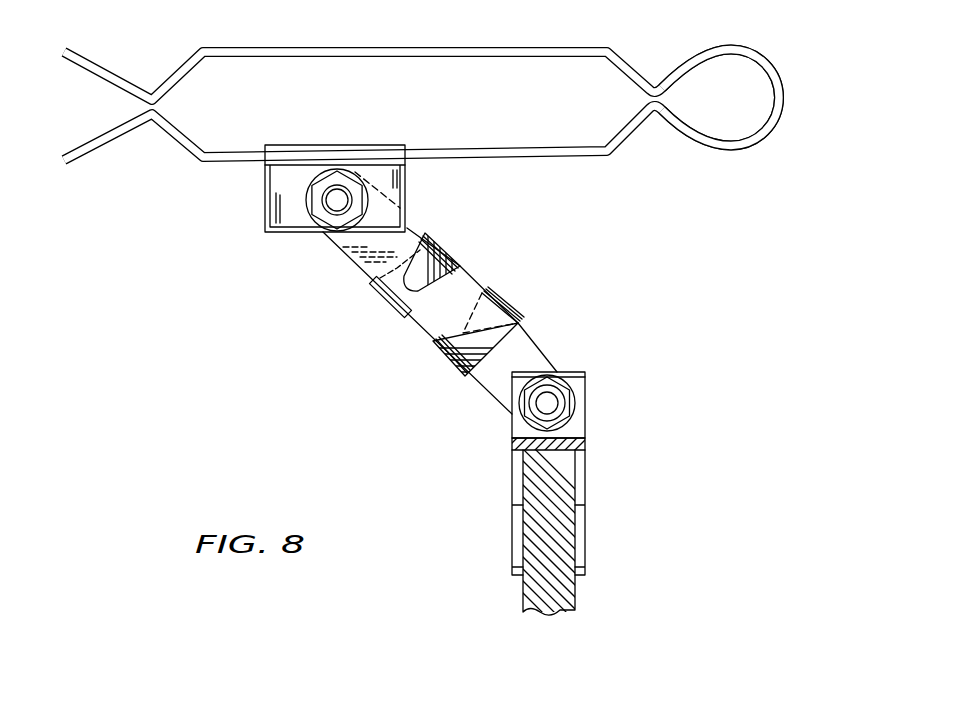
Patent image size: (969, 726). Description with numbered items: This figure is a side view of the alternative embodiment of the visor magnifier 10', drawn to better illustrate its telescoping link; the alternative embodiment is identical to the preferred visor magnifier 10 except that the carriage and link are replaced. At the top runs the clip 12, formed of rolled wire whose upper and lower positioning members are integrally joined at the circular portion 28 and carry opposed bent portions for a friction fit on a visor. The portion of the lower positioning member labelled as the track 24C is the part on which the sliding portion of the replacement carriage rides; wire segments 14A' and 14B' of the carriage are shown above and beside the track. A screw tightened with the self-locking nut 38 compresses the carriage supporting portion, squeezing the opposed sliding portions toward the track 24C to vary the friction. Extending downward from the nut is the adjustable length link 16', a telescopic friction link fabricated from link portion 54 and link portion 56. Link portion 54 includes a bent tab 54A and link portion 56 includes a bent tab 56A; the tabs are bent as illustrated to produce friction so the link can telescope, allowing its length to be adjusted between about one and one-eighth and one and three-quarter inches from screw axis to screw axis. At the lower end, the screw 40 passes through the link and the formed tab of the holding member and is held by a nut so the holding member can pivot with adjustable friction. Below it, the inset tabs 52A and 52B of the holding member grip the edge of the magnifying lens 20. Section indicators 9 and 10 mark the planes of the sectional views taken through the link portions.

The clip 12 is at (622, 55).
The circular portion 28 is at (784, 99).
The track 24C is at (345, 145).
The self-locking nut 38 is at (312, 210).
The lower wire arm 14A' is at (165, 161).
The wire arm segment 14B' is at (502, 144).
The adjustable length link 16' is at (457, 321).
The link portion 54 is at (343, 248).
The tab 56A is at (435, 258).
The link portion 56 is at (493, 378).
The tab 54A is at (522, 323).
The screw 40 is at (552, 401).
The magnifying lens 20 is at (557, 484).
The inset tab 52B is at (513, 543).
The inset tab 52A is at (587, 544).
The section line 9- 9 is at (468, 220).
The visor magnifier 10 is at (446, 312).
The visor magnifier 10' is at (141, 404).